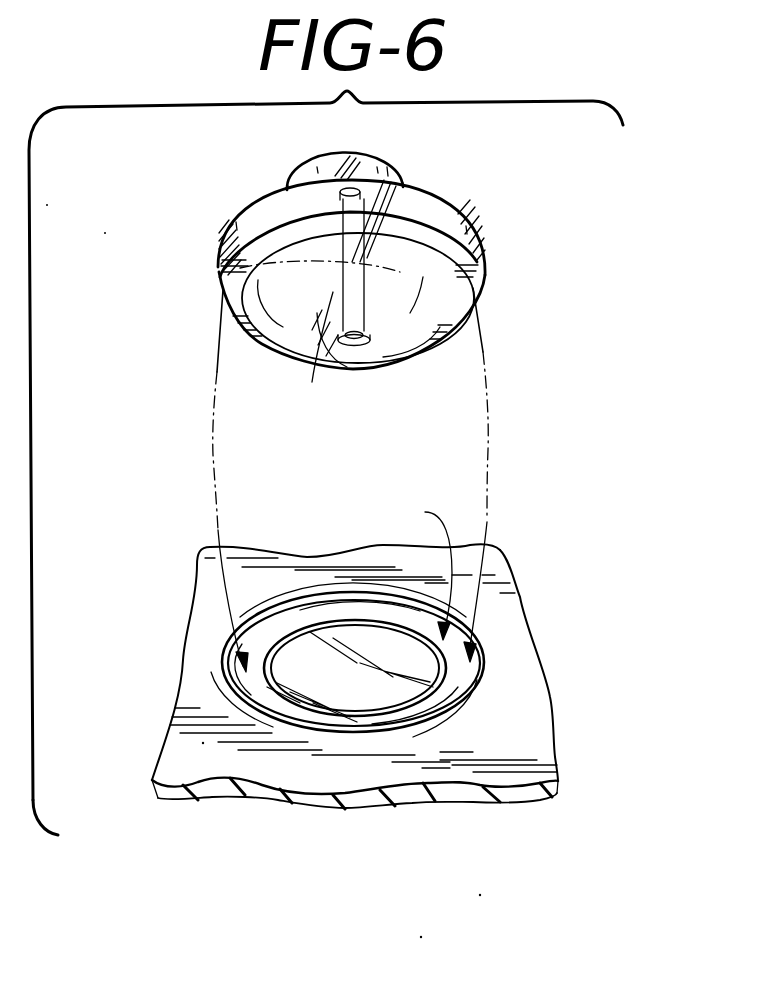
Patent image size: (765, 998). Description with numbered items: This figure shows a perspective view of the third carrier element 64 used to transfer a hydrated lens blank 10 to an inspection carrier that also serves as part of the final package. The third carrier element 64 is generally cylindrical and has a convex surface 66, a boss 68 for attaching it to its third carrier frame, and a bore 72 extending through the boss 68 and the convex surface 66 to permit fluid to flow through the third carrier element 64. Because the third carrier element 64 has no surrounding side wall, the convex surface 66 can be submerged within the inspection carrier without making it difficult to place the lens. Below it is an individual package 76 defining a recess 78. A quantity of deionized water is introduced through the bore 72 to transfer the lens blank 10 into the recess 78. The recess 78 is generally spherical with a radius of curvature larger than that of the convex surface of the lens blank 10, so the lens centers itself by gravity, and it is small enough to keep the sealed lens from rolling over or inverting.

The lens blank 10 is at (219, 278).
The third carrier element 64 is at (484, 248).
The convex surface 66 is at (397, 333).
The boss 68 is at (405, 174).
The bore 72 is at (312, 383).
The individual package 76 is at (552, 710).
The recess 78 is at (417, 570).